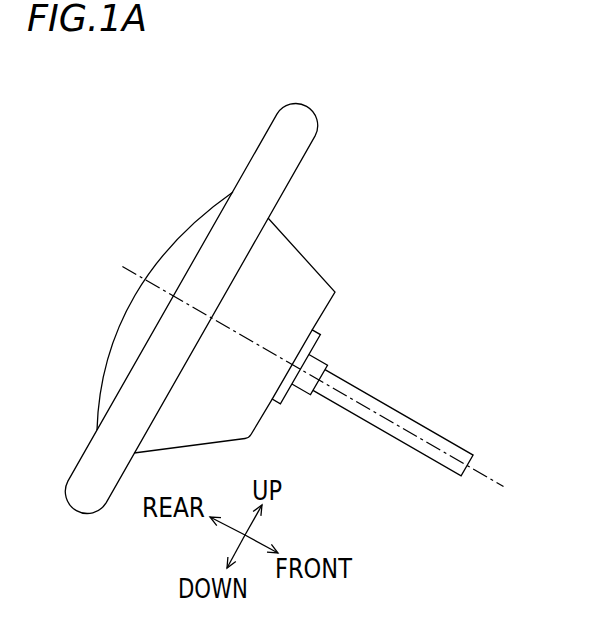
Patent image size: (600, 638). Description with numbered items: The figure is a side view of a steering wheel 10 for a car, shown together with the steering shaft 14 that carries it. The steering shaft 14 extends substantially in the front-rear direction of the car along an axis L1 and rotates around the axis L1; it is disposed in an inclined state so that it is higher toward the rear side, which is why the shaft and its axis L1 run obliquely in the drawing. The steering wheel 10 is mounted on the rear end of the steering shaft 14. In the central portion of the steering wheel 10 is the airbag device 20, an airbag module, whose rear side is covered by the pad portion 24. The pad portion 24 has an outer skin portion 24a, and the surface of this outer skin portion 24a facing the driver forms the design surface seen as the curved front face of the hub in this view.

The steering wheel 10 is at (208, 132).
The airbag device 20 is at (205, 213).
The pad portion 24 is at (132, 311).
The outer skin portion 24a is at (146, 306).
The steering shaft 14 is at (420, 418).
The axis L1 is at (482, 473).